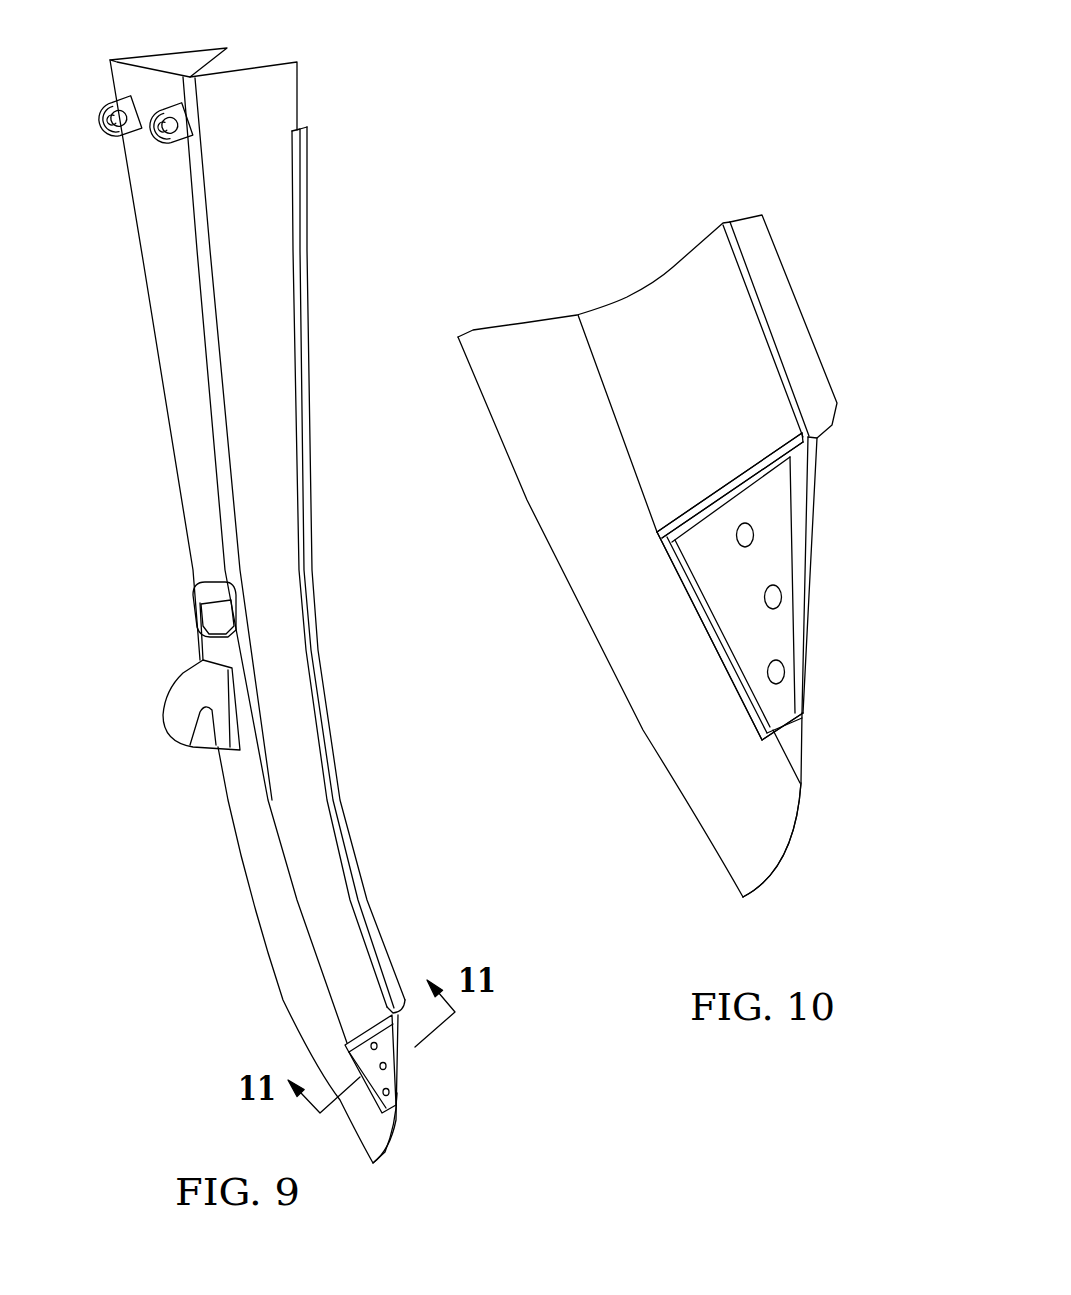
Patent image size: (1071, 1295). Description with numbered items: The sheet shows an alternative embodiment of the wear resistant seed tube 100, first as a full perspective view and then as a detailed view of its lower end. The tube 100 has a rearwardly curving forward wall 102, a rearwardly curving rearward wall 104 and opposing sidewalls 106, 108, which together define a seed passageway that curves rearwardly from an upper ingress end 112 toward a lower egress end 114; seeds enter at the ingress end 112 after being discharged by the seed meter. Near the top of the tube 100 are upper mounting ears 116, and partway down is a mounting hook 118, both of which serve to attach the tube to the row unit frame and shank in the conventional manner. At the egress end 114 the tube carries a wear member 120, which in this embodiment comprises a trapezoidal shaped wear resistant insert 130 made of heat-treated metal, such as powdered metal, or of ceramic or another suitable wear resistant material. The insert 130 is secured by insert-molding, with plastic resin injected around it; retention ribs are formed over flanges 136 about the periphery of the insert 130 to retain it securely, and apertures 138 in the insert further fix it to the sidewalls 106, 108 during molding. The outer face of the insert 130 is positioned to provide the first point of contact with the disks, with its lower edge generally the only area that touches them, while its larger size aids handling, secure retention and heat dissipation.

In FIG. 9, the wear resistant seed tube 100 is at (326, 270).
In FIG. 10, the wear resistant seed tube 100 is at (590, 275).
In FIG. 9, the forward wall 102 is at (255, 832).
In FIG. 10, the forward wall 102 is at (567, 557).
In FIG. 9, the rearward wall 104 is at (347, 813).
In FIG. 10, the rearward wall 104 is at (808, 348).
In FIG. 9, the sidewall 106 is at (285, 98).
In FIG. 9, the sidewall 108 is at (185, 65).
In FIG. 9, the ingress end 112 is at (280, 62).
In FIG. 9, the egress end 114 is at (400, 1110).
In FIG. 10, the egress end 114 is at (802, 802).
In FIG. 9, the upper mounting ears 116 is at (160, 152).
In FIG. 9, the mounting hook 118 is at (200, 677).
In FIG. 9, the wear member 120 is at (345, 1061).
In FIG. 10, the wear member 120 is at (649, 586).
In FIG. 10, the wear resistant insert 130 is at (748, 503).
In FIG. 10, the flanges 136 is at (797, 553).
In FIG. 10, the apertures 138 is at (775, 597).